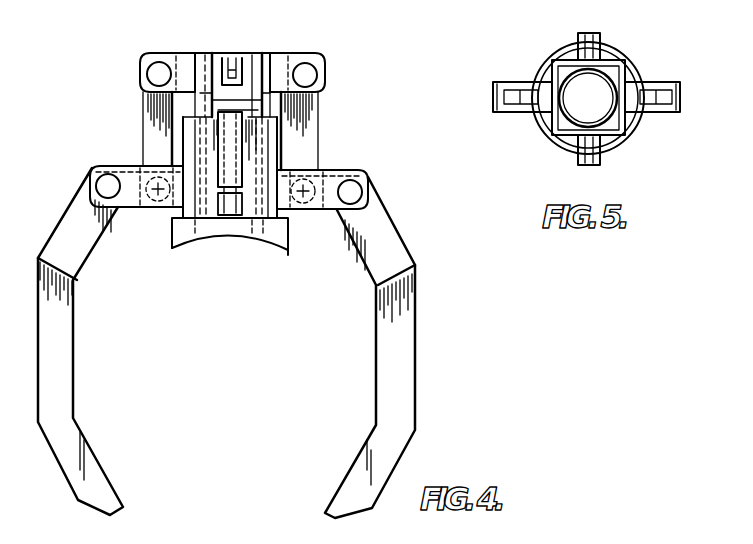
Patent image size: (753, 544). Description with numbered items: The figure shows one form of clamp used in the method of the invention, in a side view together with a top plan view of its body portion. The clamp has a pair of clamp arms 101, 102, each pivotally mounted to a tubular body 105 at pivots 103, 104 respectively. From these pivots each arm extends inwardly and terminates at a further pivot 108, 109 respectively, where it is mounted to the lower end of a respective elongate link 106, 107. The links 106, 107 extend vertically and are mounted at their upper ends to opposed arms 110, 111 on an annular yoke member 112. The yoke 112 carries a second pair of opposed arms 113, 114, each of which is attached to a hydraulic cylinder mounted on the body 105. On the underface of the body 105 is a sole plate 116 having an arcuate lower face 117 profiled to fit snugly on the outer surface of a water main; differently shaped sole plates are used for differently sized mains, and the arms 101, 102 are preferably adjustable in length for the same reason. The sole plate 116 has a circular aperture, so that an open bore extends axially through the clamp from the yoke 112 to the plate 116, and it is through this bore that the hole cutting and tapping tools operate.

In FIG. 4, the clamp arm 101 is at (400, 365).
In FIG. 4, the clamp arm 102 is at (60, 360).
In FIG. 4, the pivot 103 is at (350, 192).
In FIG. 4, the pivot 104 is at (108, 178).
In FIG. 4, the tubular body 105 is at (292, 218).
In FIG. 4, the elongate link 106 is at (317, 133).
In FIG. 4, the elongate link 107 is at (150, 130).
In FIG. 4, the pivot 108 is at (303, 203).
In FIG. 4, the pivot 109 is at (156, 214).
In FIG. 4, the opposed arm 110 is at (288, 58).
In FIG. 5, the opposed arm 110 is at (667, 110).
In FIG. 4, the opposed arm 111 is at (177, 58).
In FIG. 5, the opposed arm 111 is at (495, 83).
In FIG. 4, the annular yoke member 112 is at (210, 60).
In FIG. 5, the annular yoke member 112 is at (550, 63).
In FIG. 4, the opposed arm 113 is at (236, 60).
In FIG. 5, the opposed arm 113 is at (597, 162).
In FIG. 5, the opposed arm 114 is at (600, 37).
In FIG. 4, the sole plate 116 is at (215, 228).
In FIG. 4, the arcuate lower face 117 is at (264, 225).